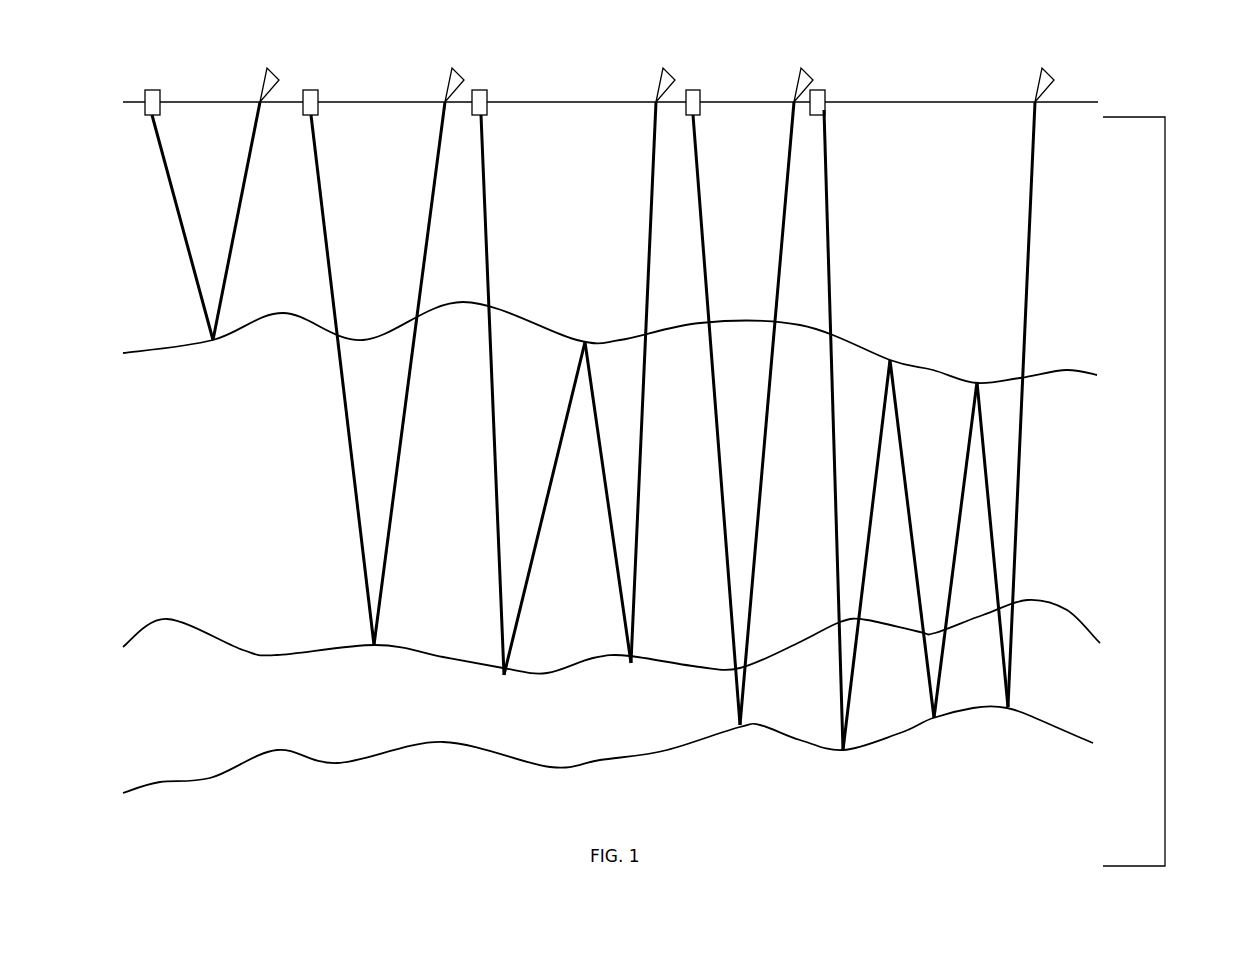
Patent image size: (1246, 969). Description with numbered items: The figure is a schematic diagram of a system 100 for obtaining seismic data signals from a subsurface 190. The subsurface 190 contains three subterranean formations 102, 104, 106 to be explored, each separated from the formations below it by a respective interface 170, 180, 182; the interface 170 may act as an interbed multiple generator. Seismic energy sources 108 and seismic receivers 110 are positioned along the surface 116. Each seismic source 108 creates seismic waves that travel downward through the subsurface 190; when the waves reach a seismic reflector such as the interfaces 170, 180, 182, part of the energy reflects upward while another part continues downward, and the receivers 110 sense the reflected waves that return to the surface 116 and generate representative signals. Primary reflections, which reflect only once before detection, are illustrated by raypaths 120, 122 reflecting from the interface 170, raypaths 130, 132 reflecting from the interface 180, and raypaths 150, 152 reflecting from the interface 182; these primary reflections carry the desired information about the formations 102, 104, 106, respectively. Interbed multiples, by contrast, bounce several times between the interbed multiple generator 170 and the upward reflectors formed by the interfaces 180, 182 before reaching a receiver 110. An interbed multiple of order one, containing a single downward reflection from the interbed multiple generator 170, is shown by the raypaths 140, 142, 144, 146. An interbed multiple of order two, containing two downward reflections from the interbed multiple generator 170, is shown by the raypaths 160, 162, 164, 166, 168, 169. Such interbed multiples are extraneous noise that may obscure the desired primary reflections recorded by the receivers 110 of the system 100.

The system 100 is at (158, 50).
The subterranean formation 102 is at (904, 211).
The subterranean formation 104 is at (219, 470).
The subterranean formation 106 is at (194, 688).
The seismic energy source 108 is at (152, 90).
The seismic receiver 110 is at (267, 68).
The surface 116 is at (1070, 102).
The raypath 120 is at (175, 210).
The raypath 122 is at (250, 122).
The raypath 130 is at (318, 225).
The raypath 132 is at (428, 218).
The raypath 140 is at (485, 216).
The raypath 142 is at (573, 382).
The raypath 144 is at (617, 592).
The raypath 146 is at (642, 210).
The raypath 150 is at (717, 457).
The raypath 152 is at (778, 228).
The raypath 160 is at (830, 415).
The raypath 162 is at (878, 447).
The raypath 164 is at (905, 457).
The raypath 166 is at (968, 422).
The raypath 168 is at (990, 538).
The raypath 169 is at (1015, 542).
The interface 170 is at (1067, 368).
The interface 180 is at (1077, 608).
The interface 182 is at (1063, 717).
The subsurface 190 is at (1165, 255).